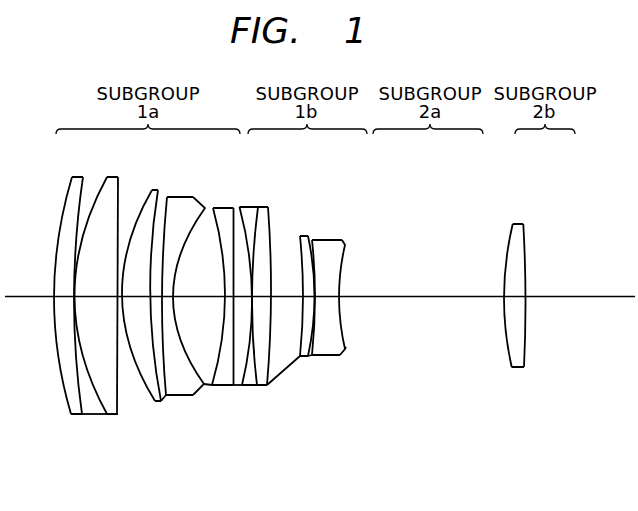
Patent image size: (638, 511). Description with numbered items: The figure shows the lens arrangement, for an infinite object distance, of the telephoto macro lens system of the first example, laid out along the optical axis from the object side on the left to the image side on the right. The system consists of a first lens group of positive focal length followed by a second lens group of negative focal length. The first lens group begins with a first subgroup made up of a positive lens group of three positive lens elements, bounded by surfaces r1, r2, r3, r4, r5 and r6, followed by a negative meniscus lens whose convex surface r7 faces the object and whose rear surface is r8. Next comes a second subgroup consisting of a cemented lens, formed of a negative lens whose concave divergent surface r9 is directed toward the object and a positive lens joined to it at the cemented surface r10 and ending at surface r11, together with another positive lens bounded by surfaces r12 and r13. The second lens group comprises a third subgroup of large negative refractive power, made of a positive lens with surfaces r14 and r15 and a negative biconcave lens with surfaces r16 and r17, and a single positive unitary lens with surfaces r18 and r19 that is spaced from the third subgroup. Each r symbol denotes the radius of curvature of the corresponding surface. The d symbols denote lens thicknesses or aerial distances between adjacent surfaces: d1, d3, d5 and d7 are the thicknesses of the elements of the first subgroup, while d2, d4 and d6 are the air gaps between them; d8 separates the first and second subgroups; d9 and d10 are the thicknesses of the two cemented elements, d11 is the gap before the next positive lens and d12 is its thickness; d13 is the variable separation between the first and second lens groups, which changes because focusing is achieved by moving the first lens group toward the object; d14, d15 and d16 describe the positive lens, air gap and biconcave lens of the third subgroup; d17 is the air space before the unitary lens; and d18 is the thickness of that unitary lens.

The radius of curvature of first lens surface r1 is at (72, 177).
The radius of curvature of second lens surface r2 is at (82, 177).
The radius of curvature of third lens surface r3 is at (109, 177).
The radius of curvature of fourth lens surface r4 is at (118, 177).
The radius of curvature of fifth lens surface r5 is at (156, 190).
The radius of curvature of sixth lens surface r6 is at (166, 197).
The radius of curvature of seventh lens surface r7 is at (197, 207).
The radius of curvature of eighth lens surface r8 is at (213, 208).
The radius of curvature of ninth lens surface r9 is at (234, 208).
The radius of curvature of tenth lens surface r10 is at (244, 206).
The radius of curvature of eleventh lens surface r11 is at (261, 206).
The radius of curvature of twelfth lens surface r12 is at (272, 206).
The radius of curvature of thirteenth lens surface r13 is at (304, 236).
The radius of curvature of fourteenth lens surface r14 is at (322, 240).
The radius of curvature of fifteenth lens surface r15 is at (341, 240).
The radius of curvature of sixteenth lens surface r16 is at (345, 246).
The radius of curvature of seventeenth lens surface r17 is at (348, 252).
The radius of curvature of eighteenth lens surface r18 is at (513, 224).
The radius of curvature of nineteenth lens surface r19 is at (523, 224).
The thickness of first lens element d1 is at (72, 414).
The aerial distance between second and third surfaces d2 is at (65, 298).
The thickness of second lens element d3 is at (107, 414).
The aerial distance between fourth and fifth surfaces d4 is at (123, 298).
The thickness of third lens element d5 is at (133, 298).
The aerial distance between sixth and seventh surfaces d6 is at (157, 298).
The thickness of negative meniscus lens d7 is at (166, 298).
The aerial distance between eighth and ninth surfaces d8 is at (176, 298).
The thickness of negative lens of cemented lens d9 is at (226, 298).
The thickness of positive lens of cemented lens d10 is at (235, 298).
The aerial distance between eleventh and twelfth surfaces d11 is at (253, 298).
The thickness of positive lens in second subgroup d12 is at (256, 298).
The aerial distance between first and second lens groups d13 is at (287, 298).
The thickness of positive lens in third subgroup d14 is at (305, 298).
The aerial distance between fifteenth and sixteenth surfaces d15 is at (315, 298).
The thickness of negative biconcave lens d16 is at (317, 298).
The aerial distance between third subgroup and unitary lens d17 is at (448, 298).
The thickness of positive unitary lens d18 is at (515, 368).